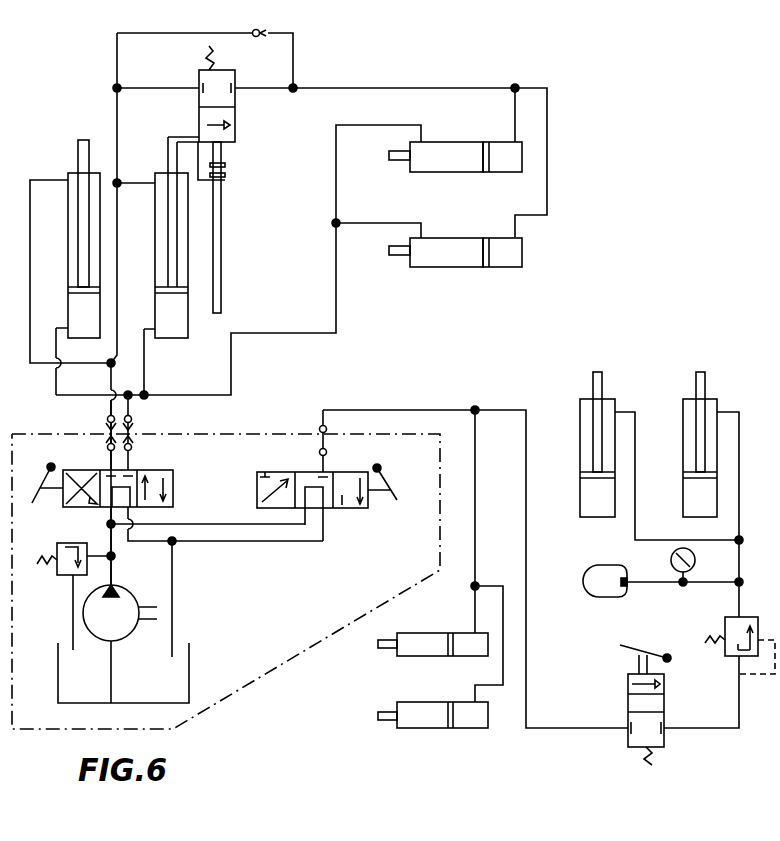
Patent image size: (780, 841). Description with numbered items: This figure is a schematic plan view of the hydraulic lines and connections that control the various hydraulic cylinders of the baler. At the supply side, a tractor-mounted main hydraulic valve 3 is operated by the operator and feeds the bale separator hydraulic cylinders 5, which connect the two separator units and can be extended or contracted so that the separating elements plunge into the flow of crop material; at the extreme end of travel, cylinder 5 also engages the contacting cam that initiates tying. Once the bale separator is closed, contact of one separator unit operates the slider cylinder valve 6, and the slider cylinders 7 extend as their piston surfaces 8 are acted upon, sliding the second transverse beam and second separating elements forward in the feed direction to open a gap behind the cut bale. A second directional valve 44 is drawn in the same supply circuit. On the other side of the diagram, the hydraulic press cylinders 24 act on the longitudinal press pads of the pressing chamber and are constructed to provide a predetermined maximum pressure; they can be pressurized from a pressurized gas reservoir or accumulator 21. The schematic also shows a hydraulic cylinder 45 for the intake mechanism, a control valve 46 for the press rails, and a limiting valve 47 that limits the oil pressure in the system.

The main hydraulic valve 3 is at (153, 477).
The bale separator hydraulic cylinder 5 is at (72, 237).
The slider cylinder valve 6 is at (230, 100).
The slider cylinder 7 is at (457, 168).
The piston surface 8 is at (486, 140).
The accumulator 21 is at (597, 590).
The hydraulic press cylinder 24 is at (580, 402).
The valve 44 is at (348, 480).
The hydraulic cylinder 45 is at (428, 653).
The control valve 46 is at (660, 722).
The limiting valve 47 is at (743, 625).